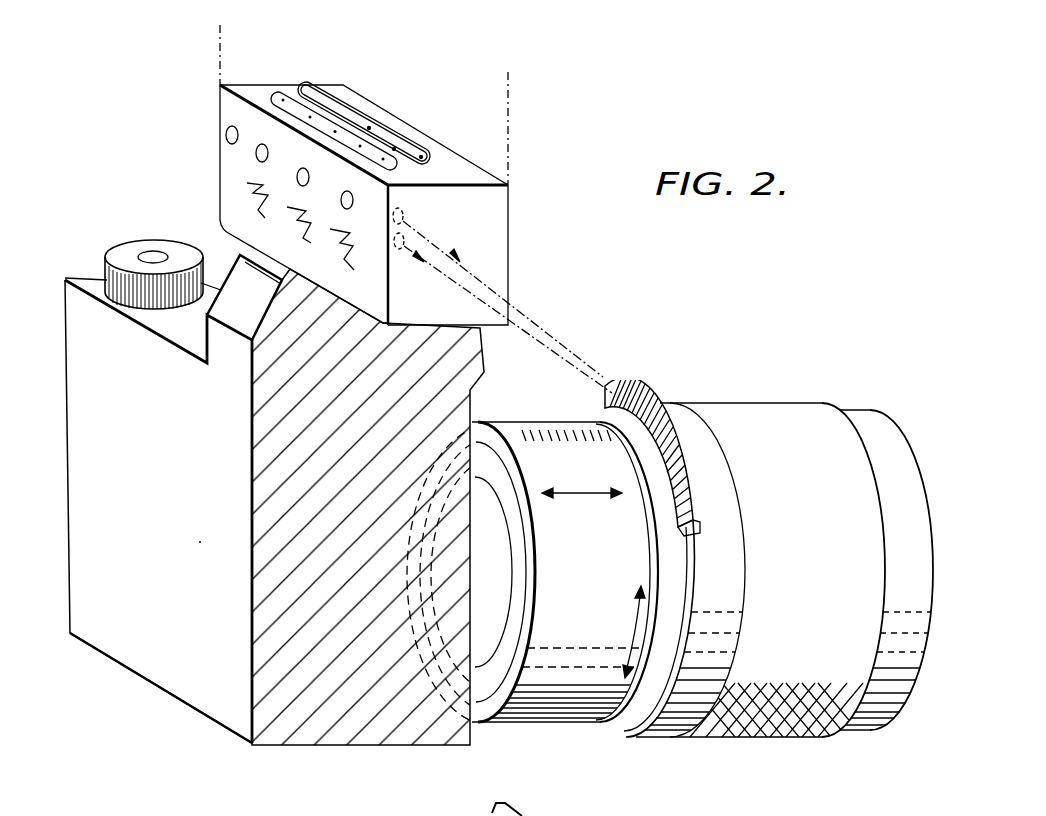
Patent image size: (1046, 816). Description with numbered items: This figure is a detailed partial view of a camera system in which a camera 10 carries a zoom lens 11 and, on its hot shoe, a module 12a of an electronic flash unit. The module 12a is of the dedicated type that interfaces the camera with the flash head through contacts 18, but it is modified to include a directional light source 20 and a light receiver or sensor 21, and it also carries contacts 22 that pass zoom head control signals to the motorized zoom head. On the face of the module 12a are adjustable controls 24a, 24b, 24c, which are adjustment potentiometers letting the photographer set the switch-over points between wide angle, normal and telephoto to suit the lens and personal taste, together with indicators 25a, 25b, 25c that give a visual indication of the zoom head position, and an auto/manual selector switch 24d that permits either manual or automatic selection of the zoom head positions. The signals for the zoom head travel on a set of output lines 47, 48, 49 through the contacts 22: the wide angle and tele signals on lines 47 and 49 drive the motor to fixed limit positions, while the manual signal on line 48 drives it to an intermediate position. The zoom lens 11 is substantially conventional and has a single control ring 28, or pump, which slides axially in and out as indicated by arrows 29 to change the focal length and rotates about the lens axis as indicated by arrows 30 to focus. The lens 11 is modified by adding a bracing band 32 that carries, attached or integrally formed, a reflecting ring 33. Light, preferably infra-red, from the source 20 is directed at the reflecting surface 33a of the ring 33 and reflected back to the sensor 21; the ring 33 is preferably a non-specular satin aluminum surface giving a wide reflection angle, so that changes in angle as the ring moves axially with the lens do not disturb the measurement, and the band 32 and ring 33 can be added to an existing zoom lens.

The camera 10 is at (66, 642).
The zoom lens 11 is at (904, 413).
The module 12a is at (520, 219).
The contacts 18 is at (278, 95).
The directional light source 20 is at (405, 214).
The light receiver or sensor 21 is at (399, 249).
The contacts 22 is at (307, 90).
The adjustable control 24a is at (352, 278).
The adjustable control 24b is at (298, 236).
The adjustable control 24c is at (258, 214).
The auto/manual selector switch 24d is at (228, 133).
The indicator 25a is at (354, 203).
The indicator 25b is at (297, 177).
The indicator 25c is at (256, 153).
The control ring 28 is at (786, 410).
The arrows 29 is at (580, 495).
The arrows 30 is at (636, 628).
The bracing band 32 is at (640, 740).
The reflecting ring 33 is at (668, 385).
The reflecting surface 33a is at (618, 378).
The output line 47 is at (422, 156).
The output line 48 is at (395, 148).
The output line 49 is at (369, 126).